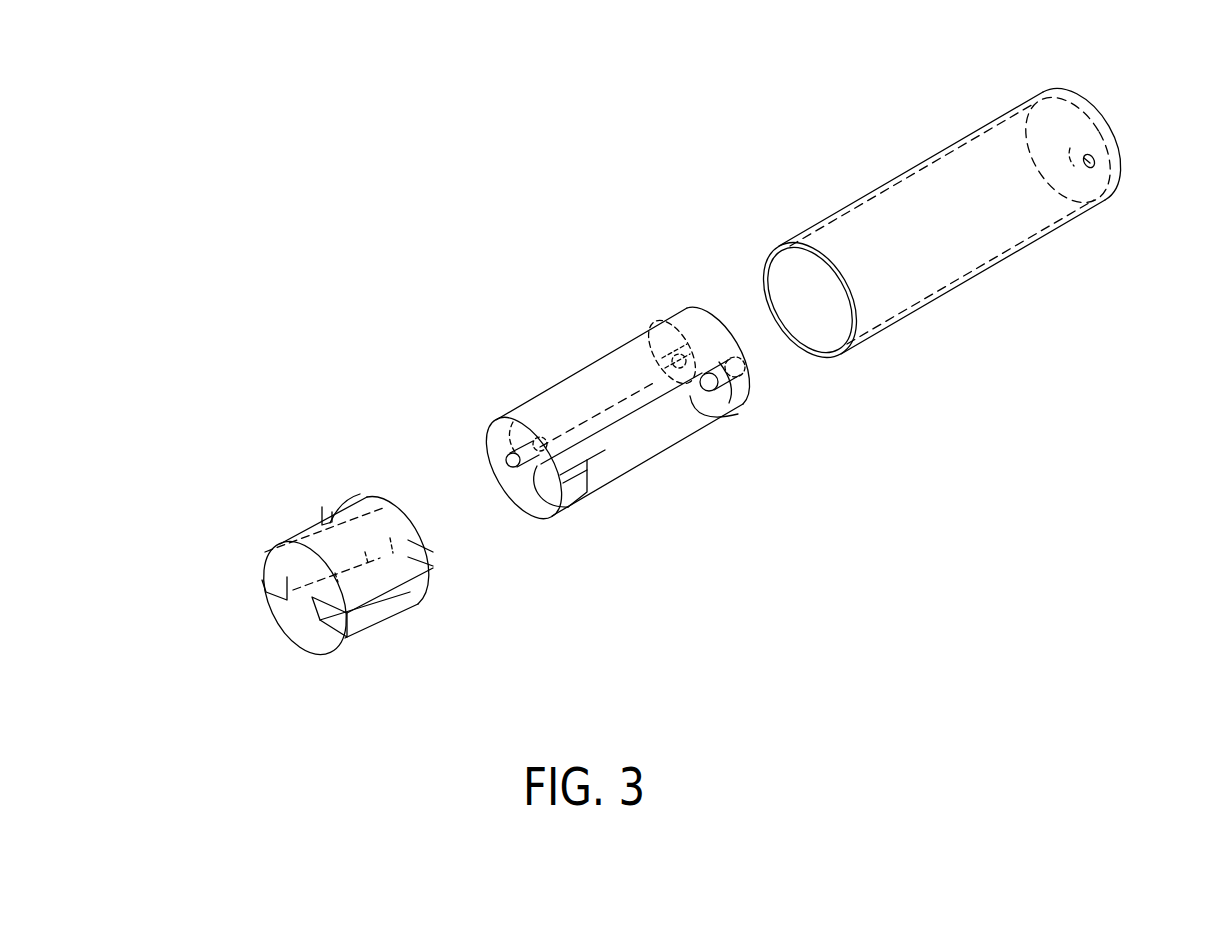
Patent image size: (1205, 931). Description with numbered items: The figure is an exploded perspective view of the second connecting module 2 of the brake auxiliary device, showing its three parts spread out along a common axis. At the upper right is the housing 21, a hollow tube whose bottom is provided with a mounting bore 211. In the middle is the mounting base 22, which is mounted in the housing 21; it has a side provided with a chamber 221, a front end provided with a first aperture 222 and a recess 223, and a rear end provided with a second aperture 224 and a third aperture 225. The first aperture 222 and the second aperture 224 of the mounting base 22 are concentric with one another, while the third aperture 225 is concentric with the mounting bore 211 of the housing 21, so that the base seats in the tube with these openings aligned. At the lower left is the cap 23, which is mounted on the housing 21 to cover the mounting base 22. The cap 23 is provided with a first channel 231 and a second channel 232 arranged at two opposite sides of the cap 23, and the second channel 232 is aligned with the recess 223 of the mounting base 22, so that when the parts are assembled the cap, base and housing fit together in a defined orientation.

The second connecting module 2 is at (440, 230).
The housing 21 is at (918, 187).
The mounting bore 211 is at (1070, 147).
The mounting base 22 is at (585, 382).
The chamber 221 is at (614, 449).
The first aperture 222 is at (507, 456).
The recess 223 is at (578, 497).
The second aperture 224 is at (650, 350).
The third aperture 225 is at (704, 405).
The cap 23 is at (308, 528).
The first channel 231 is at (276, 585).
The second channel 232 is at (350, 612).